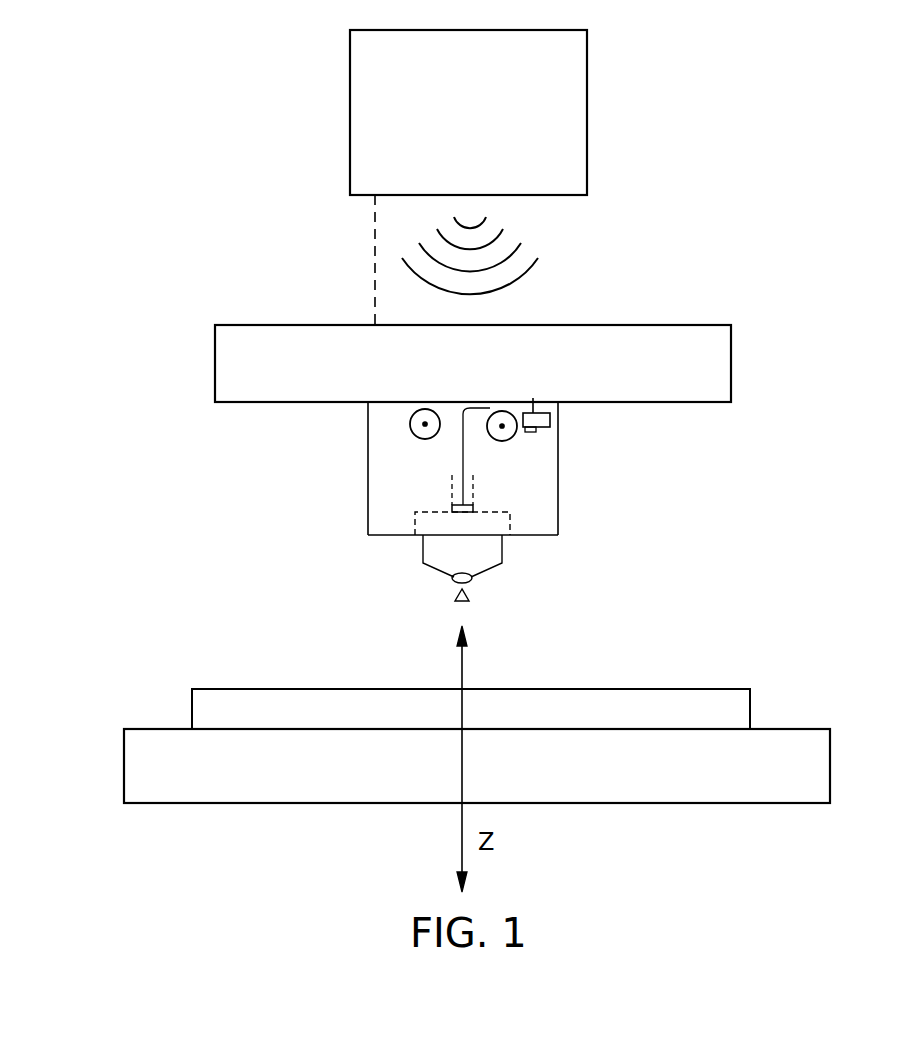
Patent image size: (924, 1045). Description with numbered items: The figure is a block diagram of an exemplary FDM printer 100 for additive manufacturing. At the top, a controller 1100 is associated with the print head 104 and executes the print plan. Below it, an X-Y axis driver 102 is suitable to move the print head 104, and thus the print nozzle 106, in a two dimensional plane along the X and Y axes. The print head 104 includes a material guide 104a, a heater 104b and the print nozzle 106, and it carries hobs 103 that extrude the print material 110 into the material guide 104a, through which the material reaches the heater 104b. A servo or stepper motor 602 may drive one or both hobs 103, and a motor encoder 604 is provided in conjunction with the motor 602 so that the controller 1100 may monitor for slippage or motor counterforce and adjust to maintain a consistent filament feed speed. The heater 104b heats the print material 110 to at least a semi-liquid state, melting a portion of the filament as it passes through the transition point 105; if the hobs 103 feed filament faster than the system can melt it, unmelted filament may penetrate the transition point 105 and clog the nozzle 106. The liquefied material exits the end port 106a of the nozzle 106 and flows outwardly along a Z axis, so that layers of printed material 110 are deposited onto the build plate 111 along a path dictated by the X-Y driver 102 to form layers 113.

The FDM printer 100 is at (803, 170).
The controller 1100 is at (350, 103).
The X-Y axis driver 102 is at (731, 360).
The hobs 103 is at (425, 408).
The print head 104 is at (360, 408).
The material guide 104a is at (475, 497).
The heater 104b is at (507, 520).
The transition point 105 is at (465, 512).
The print nozzle 106 is at (503, 555).
The end port 106a is at (468, 582).
The print material 110 is at (468, 597).
The layers 113 is at (751, 703).
The build plate 111 is at (831, 772).
The servo or stepper motor 602 is at (533, 400).
The motor encoder 604 is at (550, 433).